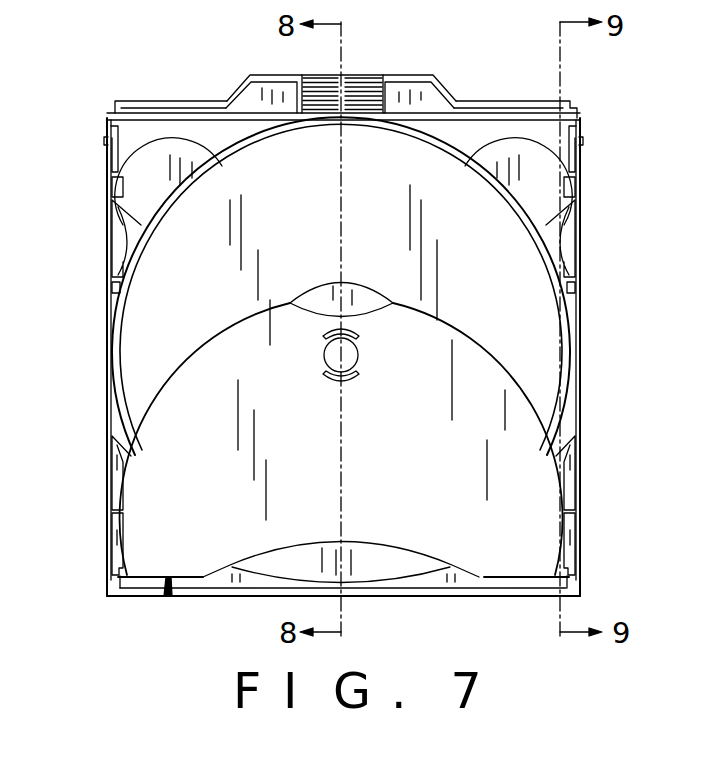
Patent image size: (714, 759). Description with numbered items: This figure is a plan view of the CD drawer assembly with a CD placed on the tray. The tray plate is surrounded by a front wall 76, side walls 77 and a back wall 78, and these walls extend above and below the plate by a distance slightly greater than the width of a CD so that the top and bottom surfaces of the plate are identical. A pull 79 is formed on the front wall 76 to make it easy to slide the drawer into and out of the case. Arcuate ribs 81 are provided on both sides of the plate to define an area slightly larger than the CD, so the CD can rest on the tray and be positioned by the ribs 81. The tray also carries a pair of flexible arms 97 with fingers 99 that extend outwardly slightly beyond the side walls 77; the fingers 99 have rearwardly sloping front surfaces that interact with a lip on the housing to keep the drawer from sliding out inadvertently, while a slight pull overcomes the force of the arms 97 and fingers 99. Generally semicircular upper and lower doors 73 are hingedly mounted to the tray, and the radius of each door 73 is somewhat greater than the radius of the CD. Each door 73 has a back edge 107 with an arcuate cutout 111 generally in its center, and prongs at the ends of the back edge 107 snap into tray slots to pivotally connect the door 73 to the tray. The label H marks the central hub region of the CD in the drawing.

The door 73 is at (415, 435).
The front wall 76 is at (577, 112).
The side wall 77 is at (107, 312).
The back wall 78 is at (467, 594).
The pull 79 is at (455, 98).
The arcuate rib 81 is at (127, 247).
The flexible arm 97 is at (112, 165).
The finger 99 is at (103, 140).
The back edge 107 is at (170, 580).
The arcuate cutout 111 is at (220, 570).
The element CD is at (393, 198).
The hub opening H is at (379, 294).